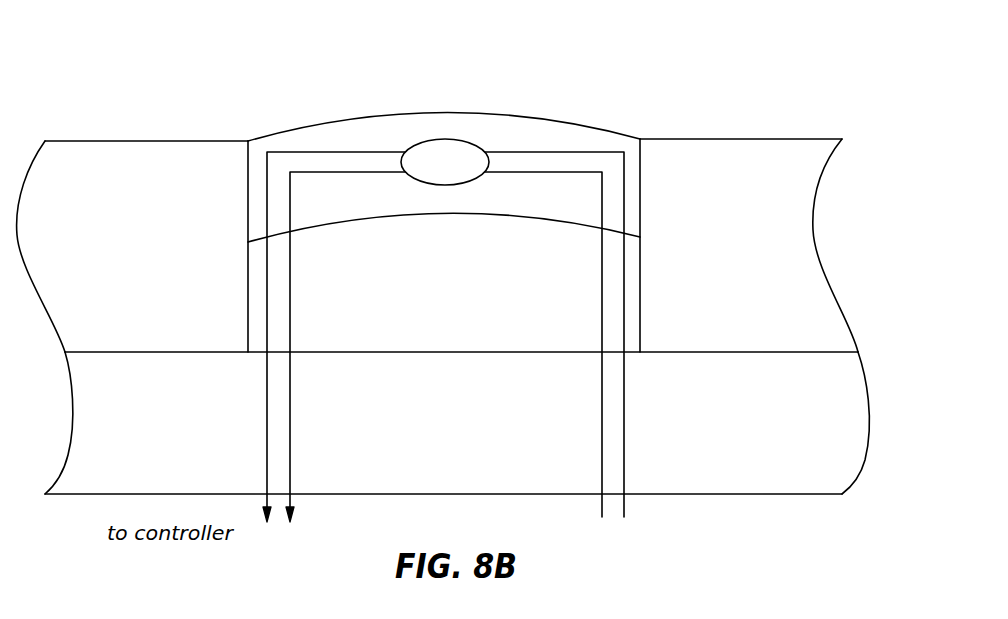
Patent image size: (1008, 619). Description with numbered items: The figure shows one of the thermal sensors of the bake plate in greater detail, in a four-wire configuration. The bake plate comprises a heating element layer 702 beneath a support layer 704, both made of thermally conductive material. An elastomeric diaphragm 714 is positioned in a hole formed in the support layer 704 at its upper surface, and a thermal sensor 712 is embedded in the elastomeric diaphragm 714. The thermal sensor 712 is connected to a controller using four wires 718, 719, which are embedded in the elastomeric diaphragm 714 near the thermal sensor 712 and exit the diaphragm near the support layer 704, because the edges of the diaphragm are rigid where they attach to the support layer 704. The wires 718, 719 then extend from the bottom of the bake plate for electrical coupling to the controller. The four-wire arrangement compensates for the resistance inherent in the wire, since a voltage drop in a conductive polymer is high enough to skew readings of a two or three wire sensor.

The heating element layer 702 is at (749, 472).
The support layer 704 is at (791, 161).
The thermal sensor 712 is at (441, 158).
The elastomeric diaphragm 714 is at (551, 139).
The wire 718 is at (624, 166).
The wire 719 is at (292, 176).